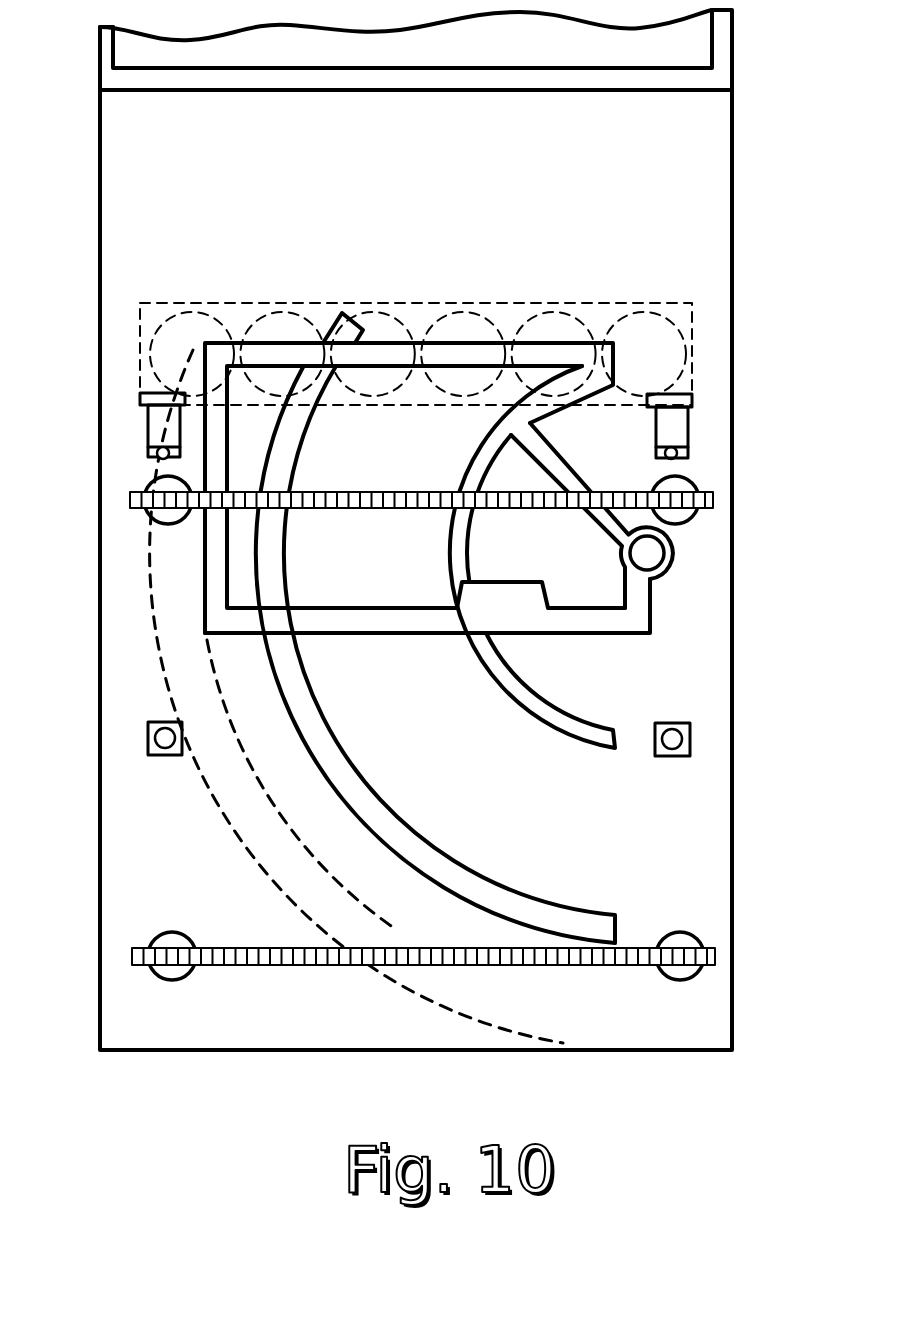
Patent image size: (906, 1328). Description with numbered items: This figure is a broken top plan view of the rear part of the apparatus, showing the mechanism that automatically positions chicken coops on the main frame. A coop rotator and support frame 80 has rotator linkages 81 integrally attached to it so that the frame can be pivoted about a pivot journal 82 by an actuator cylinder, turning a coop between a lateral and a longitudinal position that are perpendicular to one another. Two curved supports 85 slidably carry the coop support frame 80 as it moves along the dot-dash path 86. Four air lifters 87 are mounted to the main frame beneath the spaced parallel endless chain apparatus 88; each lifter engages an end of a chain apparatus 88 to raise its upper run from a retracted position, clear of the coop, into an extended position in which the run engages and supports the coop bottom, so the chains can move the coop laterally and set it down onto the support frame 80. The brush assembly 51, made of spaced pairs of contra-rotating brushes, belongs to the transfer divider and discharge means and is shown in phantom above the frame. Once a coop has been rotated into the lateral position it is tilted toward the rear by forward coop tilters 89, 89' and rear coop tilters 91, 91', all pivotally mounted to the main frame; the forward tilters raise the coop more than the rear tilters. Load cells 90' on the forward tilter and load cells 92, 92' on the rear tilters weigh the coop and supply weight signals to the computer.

The brush assembly 51 is at (507, 278).
The coop rotator and support frame 80 is at (340, 607).
The rotator linkages 81 is at (560, 450).
The pivot journal 82 is at (652, 553).
The curved supports 85 is at (523, 652).
The dot-dash path 86 is at (150, 617).
The air lifters 87 is at (692, 522).
The endless chain apparatus 88 is at (350, 492).
The forward coop tilter 89 is at (733, 426).
The forward coop tilter 89' is at (432, 429).
The load cell 90' is at (349, 470).
The rear coop tilter 91 is at (650, 714).
The rear coop tilter 91' is at (165, 781).
The load cell 92 is at (651, 774).
The load cell 92' is at (102, 710).